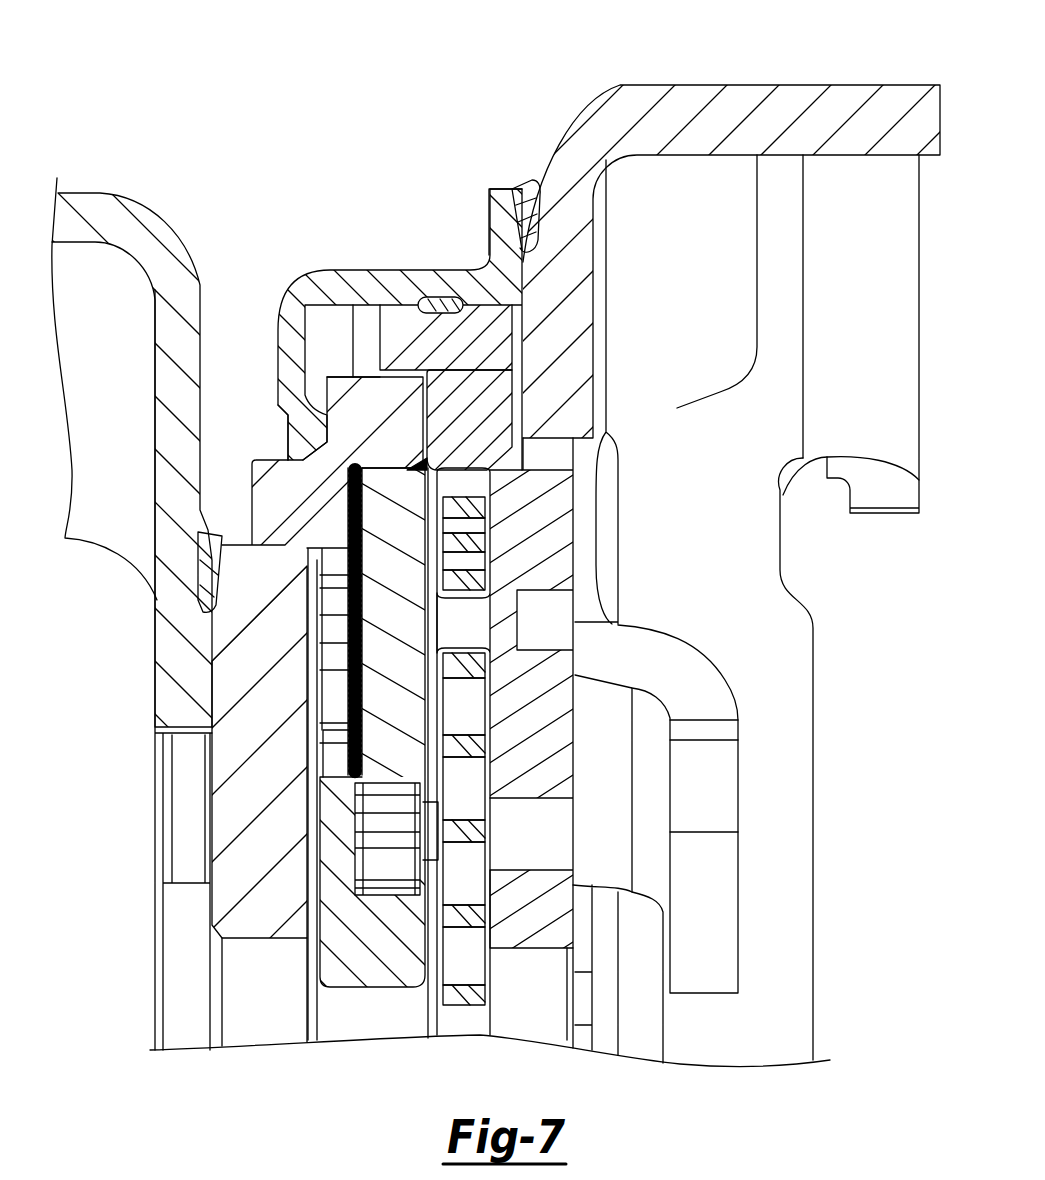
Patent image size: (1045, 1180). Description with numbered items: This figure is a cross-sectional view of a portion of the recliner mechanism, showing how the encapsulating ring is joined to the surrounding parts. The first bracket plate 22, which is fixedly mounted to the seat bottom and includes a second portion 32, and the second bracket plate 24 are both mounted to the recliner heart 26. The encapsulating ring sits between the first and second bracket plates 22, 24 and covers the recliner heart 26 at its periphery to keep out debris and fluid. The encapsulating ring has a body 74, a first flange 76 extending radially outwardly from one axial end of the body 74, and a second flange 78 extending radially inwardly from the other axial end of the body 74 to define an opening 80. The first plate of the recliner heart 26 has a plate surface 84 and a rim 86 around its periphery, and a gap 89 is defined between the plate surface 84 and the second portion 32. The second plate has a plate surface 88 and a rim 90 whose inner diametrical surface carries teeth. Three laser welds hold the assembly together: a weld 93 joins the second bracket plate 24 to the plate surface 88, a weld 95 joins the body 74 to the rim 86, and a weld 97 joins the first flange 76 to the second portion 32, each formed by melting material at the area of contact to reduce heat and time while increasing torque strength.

The first bracket plate 22 is at (755, 78).
The second bracket plate 24 is at (100, 195).
The recliner heart 26 is at (576, 606).
The second portion 32 is at (570, 372).
The body 74 is at (365, 278).
The first flange 76 is at (500, 208).
The second flange 78 is at (297, 420).
The opening 80 is at (298, 446).
The plate surface 84 is at (482, 443).
The rim 86 is at (407, 325).
The plate surface 88 is at (215, 600).
The gap 89 is at (517, 405).
The rim 90 is at (337, 390).
The weld 93 is at (208, 575).
The weld 95 is at (428, 300).
The weld 97 is at (522, 208).